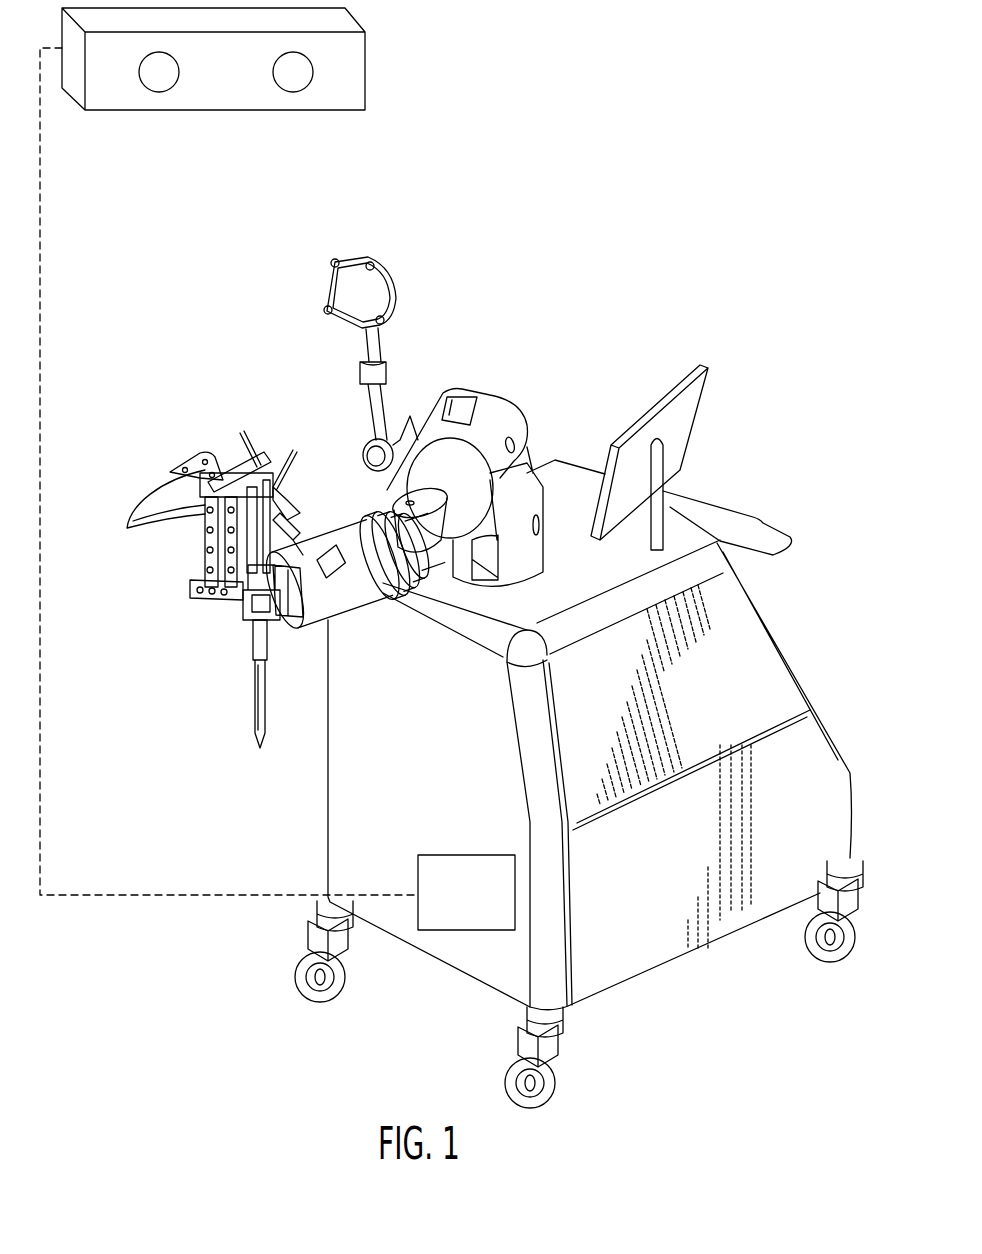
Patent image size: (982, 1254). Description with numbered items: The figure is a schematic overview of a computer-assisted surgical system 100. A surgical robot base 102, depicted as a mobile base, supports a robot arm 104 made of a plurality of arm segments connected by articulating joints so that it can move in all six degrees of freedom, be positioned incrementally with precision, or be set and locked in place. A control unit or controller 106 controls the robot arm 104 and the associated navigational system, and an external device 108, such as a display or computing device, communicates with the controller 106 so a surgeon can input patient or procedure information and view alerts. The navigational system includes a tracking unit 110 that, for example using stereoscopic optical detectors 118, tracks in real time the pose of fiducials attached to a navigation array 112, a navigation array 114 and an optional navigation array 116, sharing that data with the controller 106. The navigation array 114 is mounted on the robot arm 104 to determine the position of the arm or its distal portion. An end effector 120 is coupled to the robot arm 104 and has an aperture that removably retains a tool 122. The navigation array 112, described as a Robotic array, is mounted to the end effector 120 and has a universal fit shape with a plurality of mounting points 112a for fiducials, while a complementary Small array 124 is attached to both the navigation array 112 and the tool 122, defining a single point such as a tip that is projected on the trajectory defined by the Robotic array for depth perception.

The computer-assisted surgical system 100 is at (692, 85).
The surgical robot base 102 is at (766, 686).
The robot arm 104 is at (430, 406).
The controller 106 is at (484, 906).
The external device 108 is at (706, 371).
The tracking unit 110 is at (373, 72).
The navigation array 112 is at (172, 478).
The mounting points 112a is at (153, 517).
The navigation array 114 is at (304, 460).
The navigation array 116 is at (321, 283).
The stereoscopic optical detectors 118 is at (163, 96).
The end effector 120 is at (242, 616).
The tool 122 is at (249, 680).
The Small array 124 is at (201, 460).